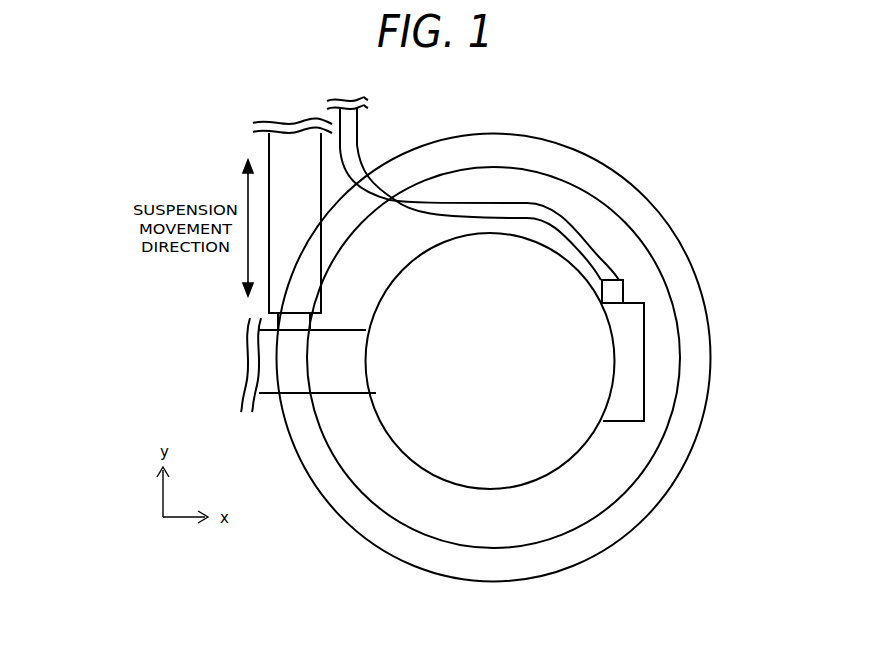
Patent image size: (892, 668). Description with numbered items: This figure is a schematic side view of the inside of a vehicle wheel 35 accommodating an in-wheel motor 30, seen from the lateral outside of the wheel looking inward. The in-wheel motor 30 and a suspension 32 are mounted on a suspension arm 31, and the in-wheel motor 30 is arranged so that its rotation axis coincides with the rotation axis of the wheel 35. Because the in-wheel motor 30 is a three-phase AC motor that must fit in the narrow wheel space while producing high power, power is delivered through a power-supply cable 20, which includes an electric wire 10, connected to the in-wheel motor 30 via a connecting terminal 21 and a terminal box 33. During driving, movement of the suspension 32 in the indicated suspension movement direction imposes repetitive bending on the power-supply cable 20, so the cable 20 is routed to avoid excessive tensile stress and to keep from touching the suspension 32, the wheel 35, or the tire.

The electric wire 10 is at (587, 238).
The power-supply cable 20 is at (545, 200).
The connecting terminal 21 is at (620, 278).
The in-wheel motor 30 is at (568, 463).
The suspension arm 31 is at (277, 353).
The suspension 32 is at (267, 155).
The terminal box 33 is at (644, 360).
The wheel 35 is at (565, 560).